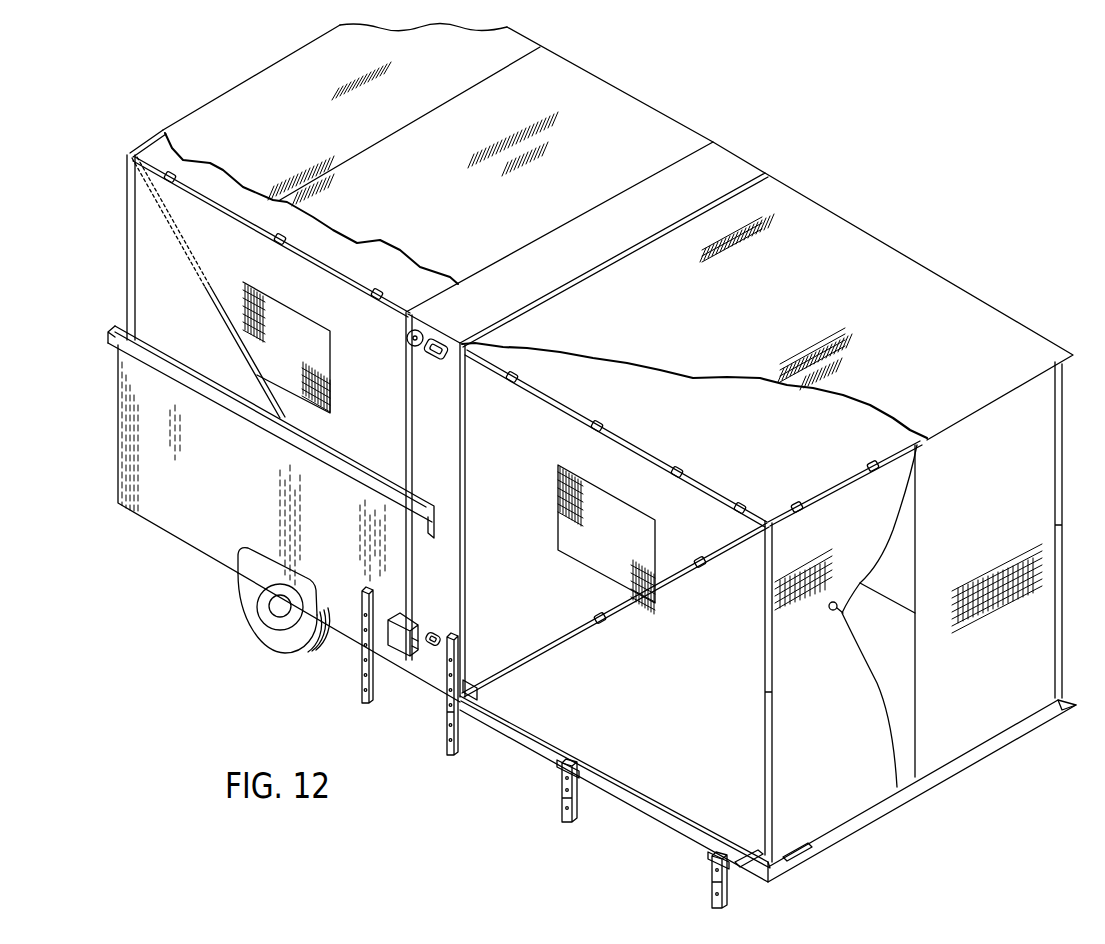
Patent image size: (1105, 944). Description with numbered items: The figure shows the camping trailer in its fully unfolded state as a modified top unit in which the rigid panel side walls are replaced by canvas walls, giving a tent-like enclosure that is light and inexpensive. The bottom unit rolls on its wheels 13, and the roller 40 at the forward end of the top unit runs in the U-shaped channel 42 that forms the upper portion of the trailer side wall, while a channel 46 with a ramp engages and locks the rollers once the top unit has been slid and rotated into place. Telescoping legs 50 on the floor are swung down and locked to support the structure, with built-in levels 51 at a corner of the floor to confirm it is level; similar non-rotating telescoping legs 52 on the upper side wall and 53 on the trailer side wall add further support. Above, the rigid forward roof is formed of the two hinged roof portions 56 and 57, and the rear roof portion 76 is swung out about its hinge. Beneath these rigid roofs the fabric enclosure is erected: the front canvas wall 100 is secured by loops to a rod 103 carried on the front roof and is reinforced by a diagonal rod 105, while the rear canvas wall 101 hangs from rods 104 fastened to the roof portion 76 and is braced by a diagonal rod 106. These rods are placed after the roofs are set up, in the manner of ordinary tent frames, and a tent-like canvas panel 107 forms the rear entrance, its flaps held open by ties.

The wheels 13 is at (292, 645).
The front rollers 40 is at (422, 322).
The U-shaped channel 42 is at (350, 465).
The channel 46 is at (410, 620).
The telescoping supports or legs 50 is at (574, 820).
The built-in levels 51 is at (797, 858).
The telescoping legs 52 is at (462, 750).
The telescoping legs 53 is at (372, 690).
The front roof portion 56 is at (481, 212).
The front roof portion 57 is at (336, 129).
The roof portion 76 is at (736, 361).
The front side wall 100 is at (157, 290).
The rear side wall 101 is at (707, 807).
The rod 103 is at (312, 258).
The rods 104 is at (560, 407).
The diagonal rod 105 is at (227, 327).
The diagonal rod 106 is at (557, 642).
The tent-like canvas panel 107 is at (865, 788).